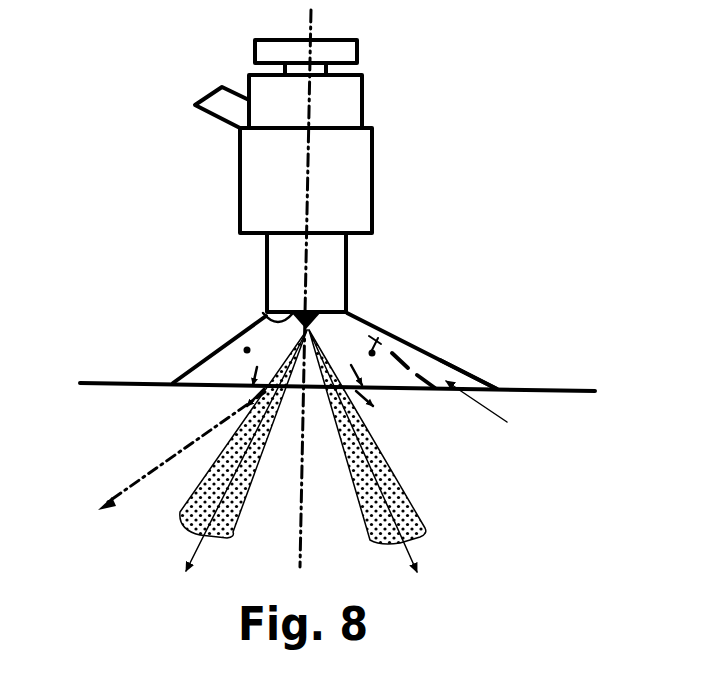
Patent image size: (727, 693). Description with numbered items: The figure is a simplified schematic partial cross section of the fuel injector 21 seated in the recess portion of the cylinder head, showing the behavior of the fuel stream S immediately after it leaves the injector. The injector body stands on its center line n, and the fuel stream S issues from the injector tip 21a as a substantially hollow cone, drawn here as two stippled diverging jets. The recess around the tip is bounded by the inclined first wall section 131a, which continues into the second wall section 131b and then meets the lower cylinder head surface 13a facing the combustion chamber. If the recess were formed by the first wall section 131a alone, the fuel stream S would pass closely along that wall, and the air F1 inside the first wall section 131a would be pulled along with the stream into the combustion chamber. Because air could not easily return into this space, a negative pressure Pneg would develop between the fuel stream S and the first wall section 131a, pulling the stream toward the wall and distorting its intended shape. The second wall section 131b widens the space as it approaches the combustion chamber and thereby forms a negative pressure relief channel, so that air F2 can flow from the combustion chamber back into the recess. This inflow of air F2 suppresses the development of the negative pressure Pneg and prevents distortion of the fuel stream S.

The fuel injector 21 is at (373, 170).
The nozzle tip 21a is at (263, 316).
The first wall section 131a is at (200, 364).
The second wall section 131b is at (468, 376).
The negative pressure Pneg is at (246, 349).
The air inside the first wall section F1 is at (240, 389).
The air flowing from the combustion chamber F2 is at (468, 393).
The surface of substrate 13a is at (577, 393).
The fuel stream S is at (403, 490).
The nozzle axis (normal line) n is at (302, 542).